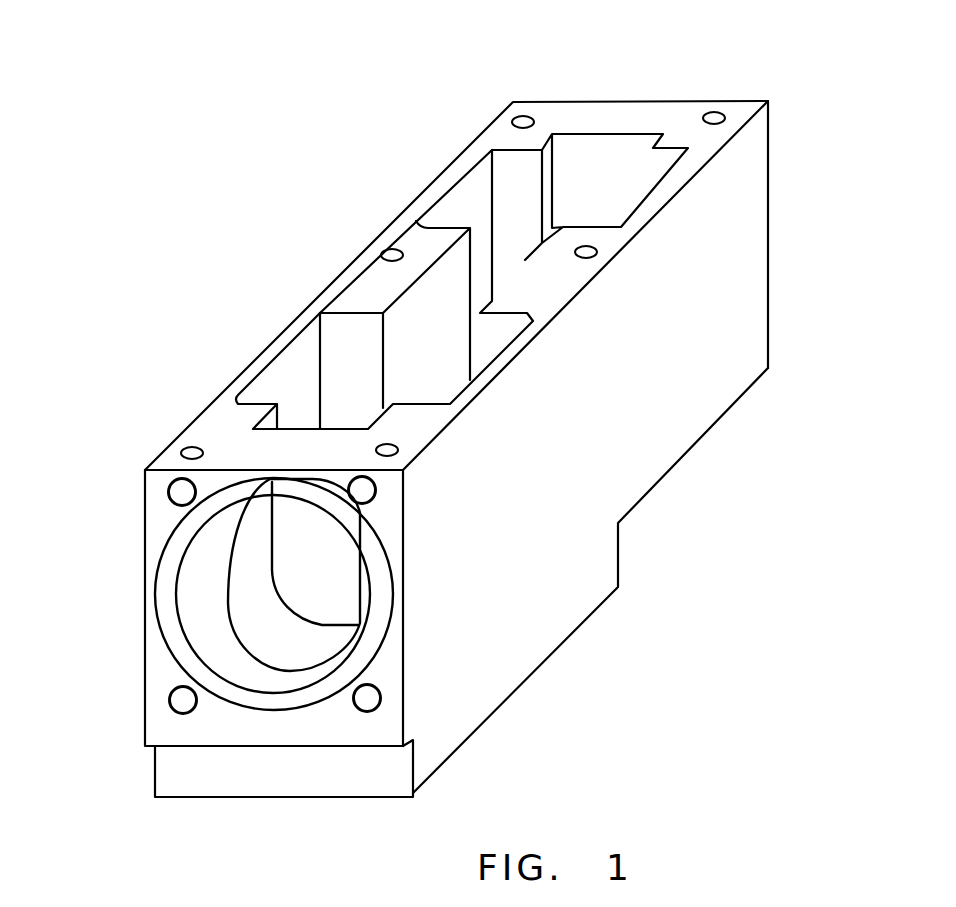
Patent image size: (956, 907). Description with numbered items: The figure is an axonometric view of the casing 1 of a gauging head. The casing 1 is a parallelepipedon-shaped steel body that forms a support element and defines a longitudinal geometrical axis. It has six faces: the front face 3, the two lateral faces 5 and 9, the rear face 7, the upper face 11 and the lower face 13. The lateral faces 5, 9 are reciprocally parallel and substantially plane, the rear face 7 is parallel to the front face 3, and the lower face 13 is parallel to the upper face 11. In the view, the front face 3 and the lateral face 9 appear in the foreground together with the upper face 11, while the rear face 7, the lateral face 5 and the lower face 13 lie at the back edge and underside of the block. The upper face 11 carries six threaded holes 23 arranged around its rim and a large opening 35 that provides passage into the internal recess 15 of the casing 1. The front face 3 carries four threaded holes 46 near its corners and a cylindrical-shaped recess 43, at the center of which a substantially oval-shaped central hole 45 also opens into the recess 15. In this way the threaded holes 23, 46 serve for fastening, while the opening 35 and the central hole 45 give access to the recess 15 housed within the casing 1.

The casing 1 is at (372, 165).
The front face 3 is at (388, 672).
The lateral face 5 is at (144, 600).
The rear face 7 is at (771, 283).
The lateral face 9 is at (613, 455).
The upper face 11 is at (697, 158).
The lower face 13 is at (603, 613).
The recess 15 is at (600, 160).
The threaded holes 23 is at (190, 450).
The opening 35 is at (310, 368).
The cylindrical-shaped recess 43 is at (228, 648).
The central hole 45 is at (322, 590).
The threaded holes 46 is at (188, 698).